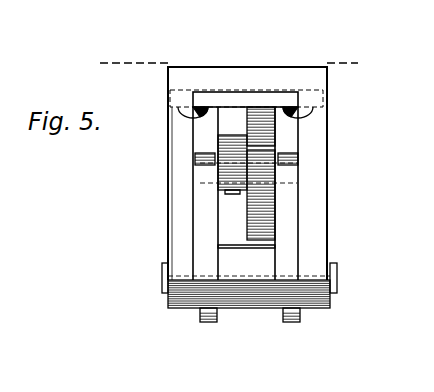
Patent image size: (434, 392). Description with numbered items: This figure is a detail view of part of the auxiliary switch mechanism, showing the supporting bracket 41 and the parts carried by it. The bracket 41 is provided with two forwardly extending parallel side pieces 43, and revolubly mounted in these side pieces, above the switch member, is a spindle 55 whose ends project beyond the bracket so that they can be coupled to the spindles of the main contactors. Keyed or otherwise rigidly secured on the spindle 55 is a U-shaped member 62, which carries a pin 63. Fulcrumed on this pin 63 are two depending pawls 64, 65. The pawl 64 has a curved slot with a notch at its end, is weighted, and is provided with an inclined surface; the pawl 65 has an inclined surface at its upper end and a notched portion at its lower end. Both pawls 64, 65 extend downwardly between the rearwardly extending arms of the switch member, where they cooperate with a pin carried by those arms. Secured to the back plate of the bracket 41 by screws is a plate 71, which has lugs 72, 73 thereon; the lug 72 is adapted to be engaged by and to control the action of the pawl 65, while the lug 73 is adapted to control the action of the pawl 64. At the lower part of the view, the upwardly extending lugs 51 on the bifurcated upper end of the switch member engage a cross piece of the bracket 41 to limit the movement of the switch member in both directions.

The bracket 41 is at (245, 74).
The plate 71 is at (285, 98).
The lug 72 is at (228, 132).
The lug 73 is at (275, 132).
The pin 63 is at (196, 163).
The side pieces 43 is at (183, 183).
The pawl 64 is at (230, 191).
The pawl 65 is at (248, 205).
The U-shaped member 62 is at (207, 227).
The spindle 55 is at (336, 273).
The lugs 51 is at (208, 324).